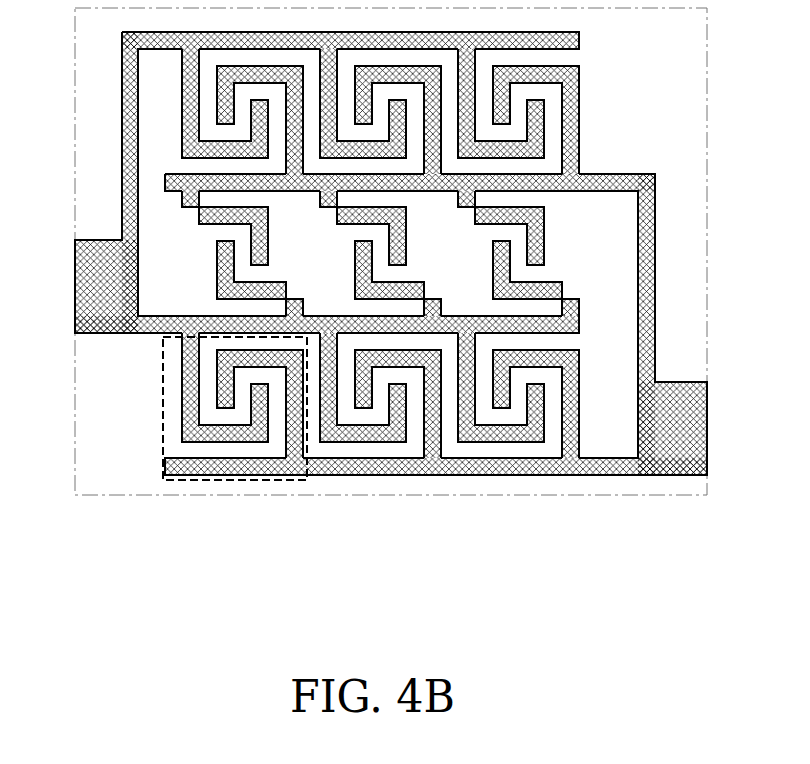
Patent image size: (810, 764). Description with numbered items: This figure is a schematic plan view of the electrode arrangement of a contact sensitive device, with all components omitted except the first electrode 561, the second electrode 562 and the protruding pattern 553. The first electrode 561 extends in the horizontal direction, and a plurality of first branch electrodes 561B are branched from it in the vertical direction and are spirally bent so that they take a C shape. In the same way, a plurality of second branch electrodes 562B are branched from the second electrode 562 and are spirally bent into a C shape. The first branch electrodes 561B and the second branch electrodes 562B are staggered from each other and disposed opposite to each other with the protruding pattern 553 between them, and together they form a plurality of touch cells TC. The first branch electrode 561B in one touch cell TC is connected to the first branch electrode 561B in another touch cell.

The first electrode 561 is at (298, 293).
The second electrode 562 is at (481, 270).
The first branch electrodes 561B is at (480, 432).
The second branch electrodes 562B is at (273, 357).
The touch cell TC is at (163, 393).
The protruding pattern 553 is at (185, 447).